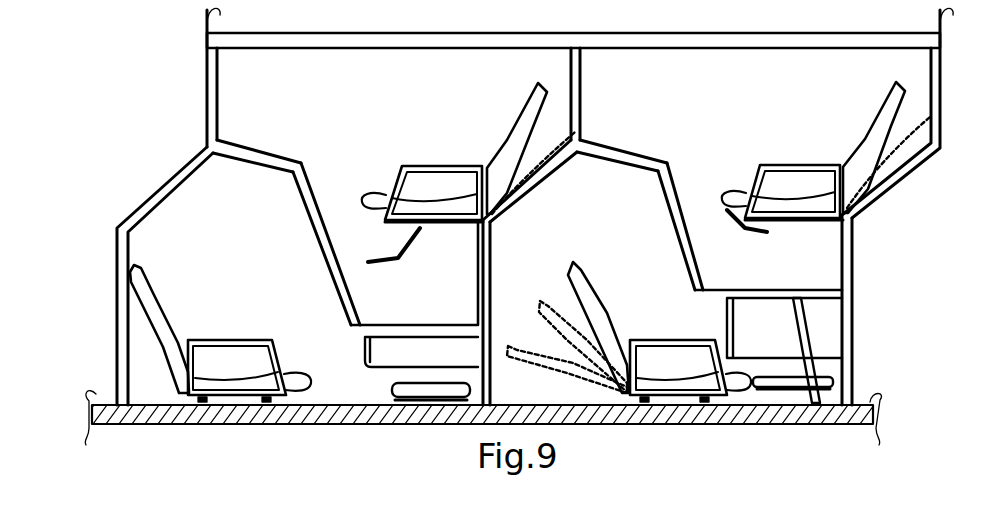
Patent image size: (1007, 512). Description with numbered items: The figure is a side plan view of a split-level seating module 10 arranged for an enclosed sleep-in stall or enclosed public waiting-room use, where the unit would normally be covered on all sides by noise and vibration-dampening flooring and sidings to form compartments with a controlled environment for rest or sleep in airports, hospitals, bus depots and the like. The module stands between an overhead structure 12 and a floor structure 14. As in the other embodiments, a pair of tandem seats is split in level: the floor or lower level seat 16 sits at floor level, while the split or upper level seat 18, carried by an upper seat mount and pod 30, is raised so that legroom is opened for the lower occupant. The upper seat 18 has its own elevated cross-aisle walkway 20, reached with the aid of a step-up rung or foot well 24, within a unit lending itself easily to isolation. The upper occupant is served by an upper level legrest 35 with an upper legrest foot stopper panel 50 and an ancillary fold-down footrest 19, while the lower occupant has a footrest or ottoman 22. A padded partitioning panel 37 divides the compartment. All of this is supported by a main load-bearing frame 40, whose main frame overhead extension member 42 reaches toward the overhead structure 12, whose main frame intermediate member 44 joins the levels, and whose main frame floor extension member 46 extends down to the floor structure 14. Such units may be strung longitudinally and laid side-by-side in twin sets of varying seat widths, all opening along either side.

The split-level seating module 10 is at (458, 130).
The overhead structure 12 is at (633, 33).
The floor structure 14 is at (358, 405).
The floor or lower level seat 16 is at (173, 322).
The split or upper level seat 18 is at (385, 193).
The ancillary fold-down footrest 19 is at (375, 262).
The elevated cross-aisle walkway 20 is at (460, 318).
The footrest or ottoman 22 is at (440, 385).
The step-up rung or foot well 24 is at (372, 345).
The upper seat mount and pod 30 is at (492, 262).
The upper level legrest 35 is at (262, 144).
The padded partitioning panel 37 is at (322, 218).
The main load-bearing frame 40 is at (328, 271).
The main frame overhead extension member 42 is at (268, 168).
The main frame intermediate member 44 is at (524, 197).
The main frame floor extension member 46 is at (490, 380).
The upper legrest foot stopper panel 50 is at (217, 103).